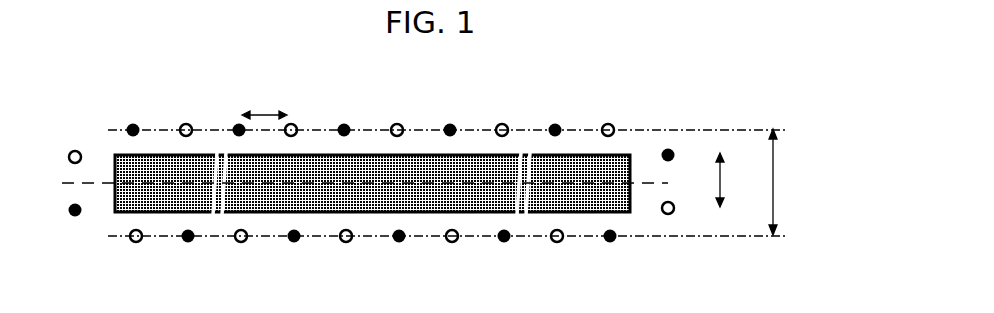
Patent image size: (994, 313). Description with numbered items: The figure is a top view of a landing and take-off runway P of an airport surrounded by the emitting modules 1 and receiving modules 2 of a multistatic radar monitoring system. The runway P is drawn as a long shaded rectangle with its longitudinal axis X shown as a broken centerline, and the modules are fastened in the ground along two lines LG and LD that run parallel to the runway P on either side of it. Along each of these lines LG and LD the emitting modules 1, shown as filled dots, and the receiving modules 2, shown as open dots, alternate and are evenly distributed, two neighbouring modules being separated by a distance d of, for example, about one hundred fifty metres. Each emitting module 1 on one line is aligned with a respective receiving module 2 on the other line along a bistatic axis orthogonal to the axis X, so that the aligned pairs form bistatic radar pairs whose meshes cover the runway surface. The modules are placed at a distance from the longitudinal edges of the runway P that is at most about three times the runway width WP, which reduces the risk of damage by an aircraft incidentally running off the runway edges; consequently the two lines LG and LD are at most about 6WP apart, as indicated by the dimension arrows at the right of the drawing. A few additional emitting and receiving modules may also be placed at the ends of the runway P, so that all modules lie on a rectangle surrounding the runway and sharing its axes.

The emitting module 1 is at (135, 122).
The receiving module 2 is at (397, 122).
The landing and take-off runway P is at (113, 155).
The longitudinal axis X is at (364, 183).
The line LG is at (696, 124).
The line LD is at (697, 245).
The distance between modules d is at (264, 107).
The runway width WP is at (736, 180).
The maximum distance between lines 6WP is at (801, 182).